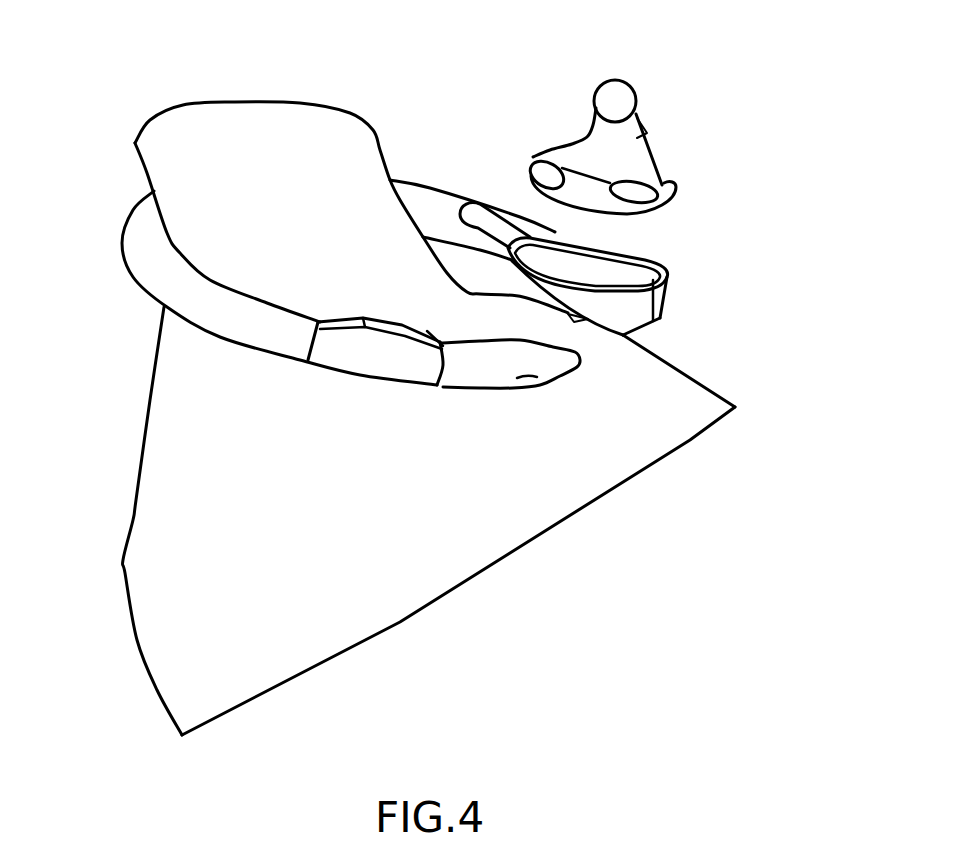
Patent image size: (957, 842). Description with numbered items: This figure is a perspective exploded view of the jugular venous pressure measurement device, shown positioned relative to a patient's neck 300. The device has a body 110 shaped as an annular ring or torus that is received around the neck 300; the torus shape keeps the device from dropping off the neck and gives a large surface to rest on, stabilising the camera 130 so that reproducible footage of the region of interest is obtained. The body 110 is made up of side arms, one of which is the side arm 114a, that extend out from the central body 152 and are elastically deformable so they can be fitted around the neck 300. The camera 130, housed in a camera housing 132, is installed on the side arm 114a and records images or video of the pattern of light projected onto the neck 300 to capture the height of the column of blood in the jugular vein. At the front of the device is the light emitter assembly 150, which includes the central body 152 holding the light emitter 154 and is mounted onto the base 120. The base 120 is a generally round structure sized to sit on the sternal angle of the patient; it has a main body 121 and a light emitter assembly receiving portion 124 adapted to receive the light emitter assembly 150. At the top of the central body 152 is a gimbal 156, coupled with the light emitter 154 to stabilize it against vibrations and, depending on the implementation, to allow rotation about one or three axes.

The neck 300 is at (387, 142).
The side arm 114a is at (250, 340).
The camera 130 is at (377, 317).
The camera housing 132 is at (358, 345).
The body 110 is at (448, 375).
The base 120 is at (668, 258).
The main body 121 is at (672, 295).
The light emitter assembly receiving portion 124 is at (663, 317).
The light emitter assembly 150 is at (640, 110).
The central body 152 is at (663, 157).
The light emitter 154 is at (587, 95).
The gimbal 156 is at (627, 80).